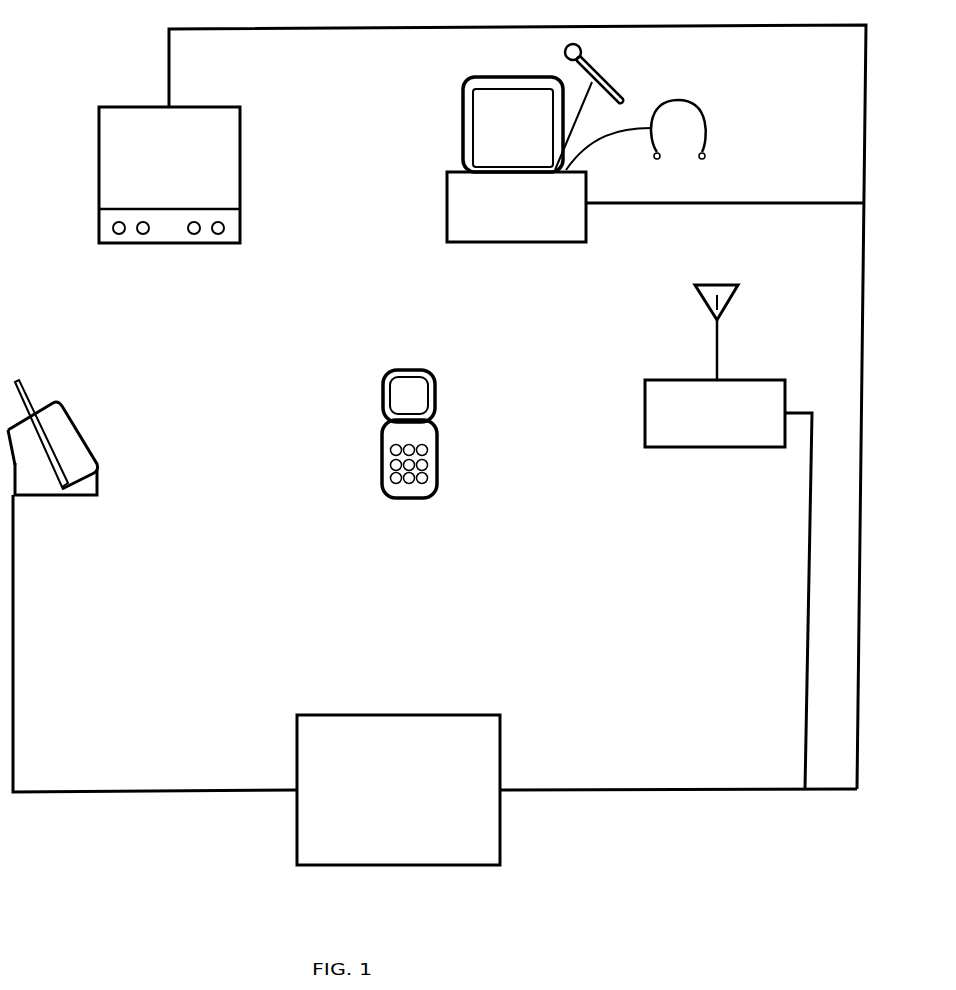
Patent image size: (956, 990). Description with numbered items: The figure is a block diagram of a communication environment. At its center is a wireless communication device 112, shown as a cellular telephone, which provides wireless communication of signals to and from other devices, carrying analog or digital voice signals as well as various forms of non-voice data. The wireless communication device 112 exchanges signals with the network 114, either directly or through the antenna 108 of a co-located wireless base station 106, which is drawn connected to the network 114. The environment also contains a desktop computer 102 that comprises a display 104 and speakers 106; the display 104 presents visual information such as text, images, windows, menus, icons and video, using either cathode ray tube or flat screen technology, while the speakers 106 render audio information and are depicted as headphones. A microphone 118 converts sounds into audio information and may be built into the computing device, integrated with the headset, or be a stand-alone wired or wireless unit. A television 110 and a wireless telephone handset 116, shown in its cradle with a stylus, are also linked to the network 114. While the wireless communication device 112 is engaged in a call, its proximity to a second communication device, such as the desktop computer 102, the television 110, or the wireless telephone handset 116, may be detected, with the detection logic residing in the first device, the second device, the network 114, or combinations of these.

The desktop computer 102 is at (447, 222).
The display 104 is at (463, 142).
The speakers / wireless base station 106 is at (710, 108).
The antenna 108 is at (743, 275).
The television 110 is at (99, 190).
The wireless communication device 112 is at (436, 378).
The network 114 is at (465, 801).
The wireless telephone handset 116 is at (80, 425).
The microphone 118 is at (608, 63).